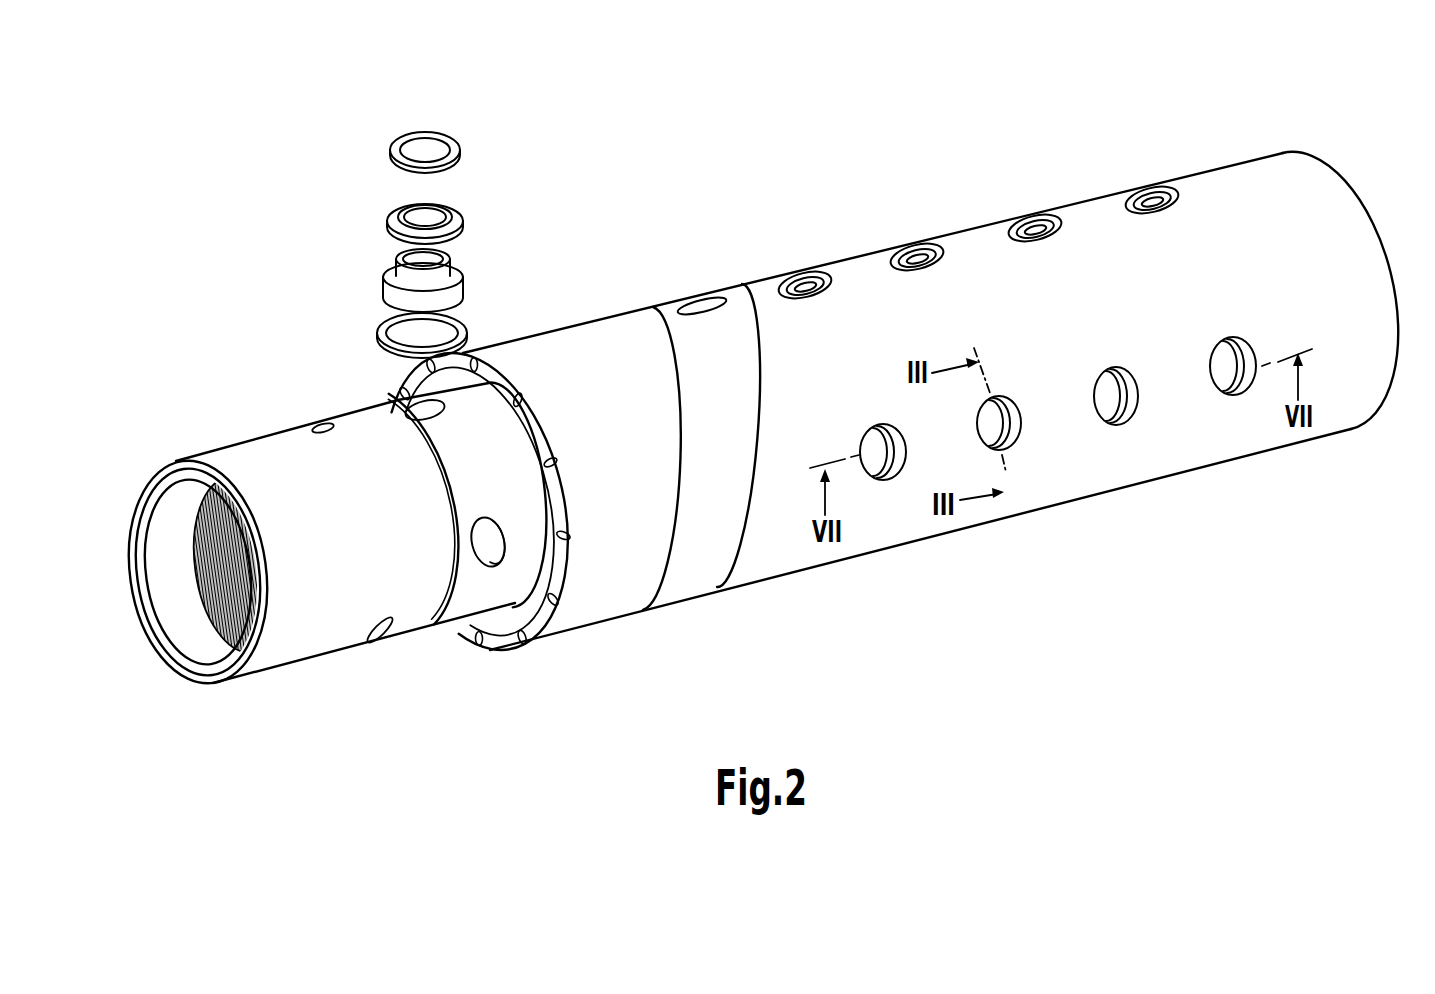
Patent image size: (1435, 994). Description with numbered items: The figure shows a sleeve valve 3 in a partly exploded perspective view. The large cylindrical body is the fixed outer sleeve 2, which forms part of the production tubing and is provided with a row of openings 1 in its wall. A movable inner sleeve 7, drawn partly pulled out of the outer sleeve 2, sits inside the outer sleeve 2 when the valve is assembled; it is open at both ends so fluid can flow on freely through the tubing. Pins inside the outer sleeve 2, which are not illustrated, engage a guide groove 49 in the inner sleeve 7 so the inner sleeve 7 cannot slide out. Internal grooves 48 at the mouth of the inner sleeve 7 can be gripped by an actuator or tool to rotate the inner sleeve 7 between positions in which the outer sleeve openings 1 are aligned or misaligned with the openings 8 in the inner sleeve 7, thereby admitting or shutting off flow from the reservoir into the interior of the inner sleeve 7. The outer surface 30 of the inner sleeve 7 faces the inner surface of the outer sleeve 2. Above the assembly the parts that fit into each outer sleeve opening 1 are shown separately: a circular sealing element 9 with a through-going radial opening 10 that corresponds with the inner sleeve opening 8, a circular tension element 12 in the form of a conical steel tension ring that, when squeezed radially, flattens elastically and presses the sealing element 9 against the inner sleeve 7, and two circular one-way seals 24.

The openings 1 is at (1047, 217).
The outer sleeve 2 is at (1343, 222).
The sleeve valve 3 is at (853, 165).
The inner sleeve 7 is at (292, 650).
The openings 8 is at (421, 413).
The sealing element 9 is at (388, 287).
The through-going radial opening 10 is at (428, 262).
The tension element 12 is at (391, 222).
The one-way seals 24 is at (394, 149).
The outer surface of the inner sleeve 30 is at (336, 643).
The internal grooves 48 is at (207, 597).
The guide groove 49 is at (381, 643).